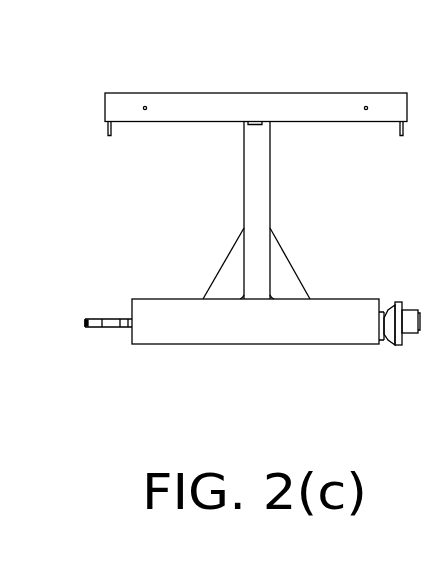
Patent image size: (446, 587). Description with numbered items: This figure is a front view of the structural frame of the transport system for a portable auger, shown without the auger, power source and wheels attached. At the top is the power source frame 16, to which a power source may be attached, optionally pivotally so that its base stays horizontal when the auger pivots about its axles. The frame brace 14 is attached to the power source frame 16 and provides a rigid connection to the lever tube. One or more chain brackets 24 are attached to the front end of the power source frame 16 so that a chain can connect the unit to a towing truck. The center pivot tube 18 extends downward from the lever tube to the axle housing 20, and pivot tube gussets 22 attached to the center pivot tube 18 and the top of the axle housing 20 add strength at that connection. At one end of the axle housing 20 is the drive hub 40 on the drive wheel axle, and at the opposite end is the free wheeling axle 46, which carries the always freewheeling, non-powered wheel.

The power source frame 16 is at (126, 103).
The chain brackets 24 is at (106, 135).
The center pivot tube 18 is at (265, 203).
The pivot tube gussets 22 is at (230, 278).
The axle housing 20 is at (313, 330).
The free wheeling axle 46 is at (103, 320).
The drive hub 40 is at (388, 330).
The frame brace 14 is at (6, 368).